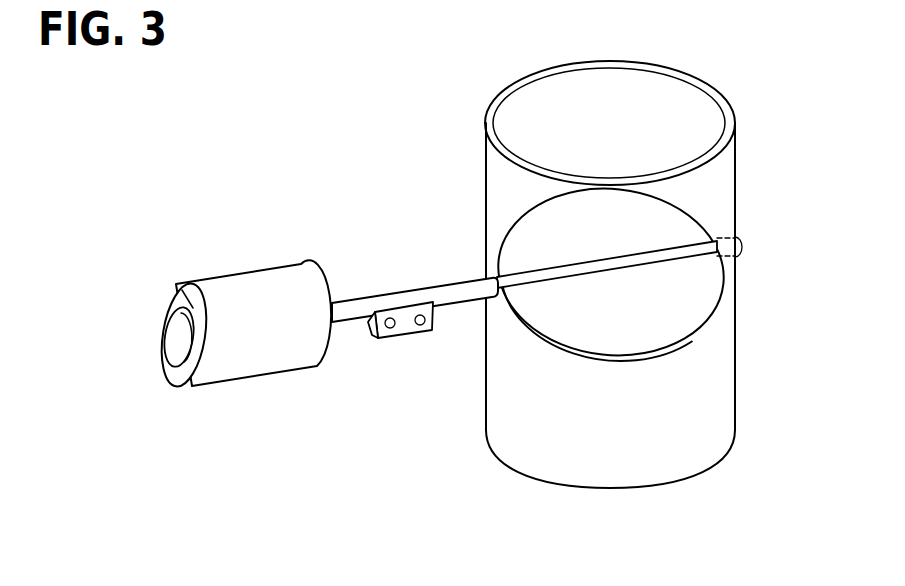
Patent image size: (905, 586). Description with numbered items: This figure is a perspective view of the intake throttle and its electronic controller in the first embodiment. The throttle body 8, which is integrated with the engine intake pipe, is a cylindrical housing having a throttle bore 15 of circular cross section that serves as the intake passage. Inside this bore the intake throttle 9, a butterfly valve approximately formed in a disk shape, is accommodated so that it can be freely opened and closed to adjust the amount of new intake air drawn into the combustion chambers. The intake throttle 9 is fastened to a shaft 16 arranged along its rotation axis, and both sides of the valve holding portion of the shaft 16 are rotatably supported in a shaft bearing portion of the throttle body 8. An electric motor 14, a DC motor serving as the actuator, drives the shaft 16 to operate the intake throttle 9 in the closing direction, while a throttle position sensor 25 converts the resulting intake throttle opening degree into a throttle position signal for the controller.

The throttle body 8 is at (736, 171).
The intake throttle 9 is at (695, 291).
The electric motor 14 is at (257, 379).
The throttle bore 15 is at (617, 97).
The shaft 16 is at (537, 269).
The throttle position sensor 25 is at (408, 338).